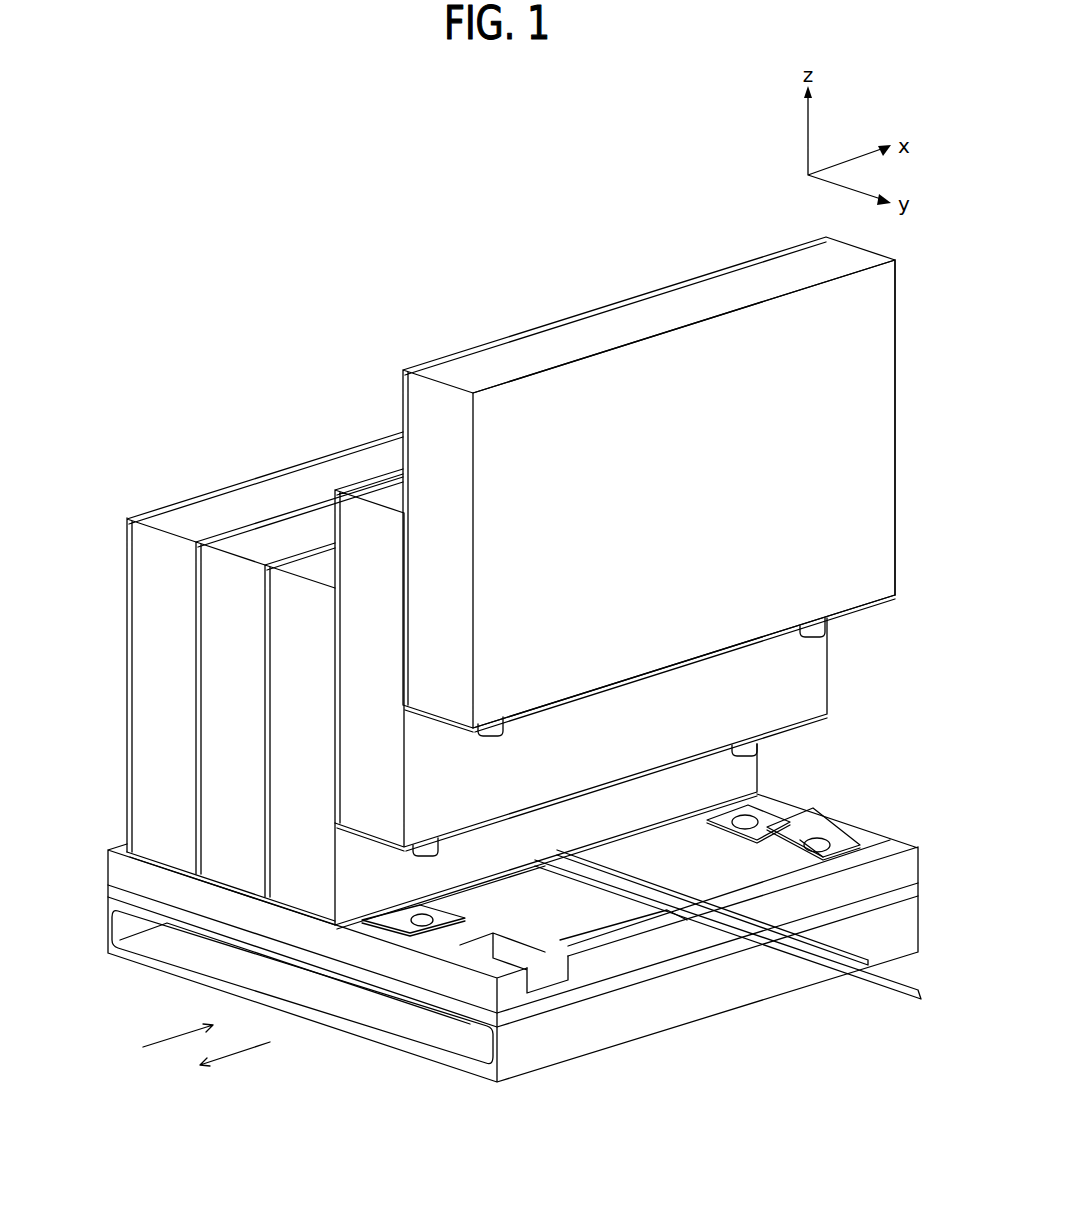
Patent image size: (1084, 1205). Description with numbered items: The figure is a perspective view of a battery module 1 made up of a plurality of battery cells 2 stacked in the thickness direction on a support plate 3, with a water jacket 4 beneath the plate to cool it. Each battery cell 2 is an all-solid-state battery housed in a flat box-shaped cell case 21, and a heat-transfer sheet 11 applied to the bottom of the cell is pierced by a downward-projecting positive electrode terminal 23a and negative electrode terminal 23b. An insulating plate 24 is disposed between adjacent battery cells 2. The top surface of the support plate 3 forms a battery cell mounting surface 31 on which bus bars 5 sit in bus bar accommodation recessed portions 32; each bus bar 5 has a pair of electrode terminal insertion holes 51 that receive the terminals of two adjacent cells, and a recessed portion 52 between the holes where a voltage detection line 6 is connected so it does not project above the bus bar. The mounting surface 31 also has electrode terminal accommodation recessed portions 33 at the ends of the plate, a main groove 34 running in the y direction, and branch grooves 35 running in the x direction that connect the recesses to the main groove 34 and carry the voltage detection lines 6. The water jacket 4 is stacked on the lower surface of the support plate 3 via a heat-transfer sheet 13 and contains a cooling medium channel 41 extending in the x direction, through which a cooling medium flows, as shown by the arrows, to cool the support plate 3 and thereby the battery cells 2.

The battery module 1 is at (285, 224).
The battery cell 2 is at (663, 296).
The cell case 21 is at (872, 410).
The heat-transfer sheet 11 is at (870, 612).
The positive electrode terminal 23a is at (505, 730).
The negative electrode terminal 23b is at (824, 636).
The insulating plate 24 is at (450, 358).
The support plate 3 is at (108, 853).
The heat-transfer sheet 13 is at (110, 892).
The water jacket 4 is at (110, 930).
The cooling medium channel 41 is at (172, 952).
The bus bar 5 is at (468, 916).
The electrode terminal insertion hole 51 is at (423, 908).
The bus bar accommodation recessed portion 32 is at (860, 837).
The battery cell mounting surface 31 is at (887, 845).
The electrode terminal accommodation recessed portion 33 is at (543, 983).
The main groove 34 is at (690, 925).
The branch groove 35 is at (727, 857).
The voltage detection line 6 is at (925, 973).
The recessed portion 52 is at (800, 840).